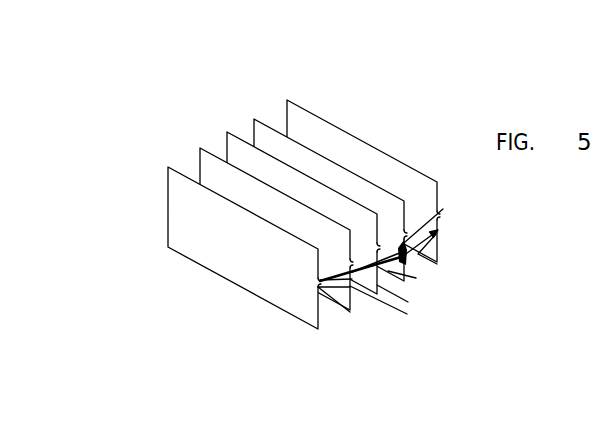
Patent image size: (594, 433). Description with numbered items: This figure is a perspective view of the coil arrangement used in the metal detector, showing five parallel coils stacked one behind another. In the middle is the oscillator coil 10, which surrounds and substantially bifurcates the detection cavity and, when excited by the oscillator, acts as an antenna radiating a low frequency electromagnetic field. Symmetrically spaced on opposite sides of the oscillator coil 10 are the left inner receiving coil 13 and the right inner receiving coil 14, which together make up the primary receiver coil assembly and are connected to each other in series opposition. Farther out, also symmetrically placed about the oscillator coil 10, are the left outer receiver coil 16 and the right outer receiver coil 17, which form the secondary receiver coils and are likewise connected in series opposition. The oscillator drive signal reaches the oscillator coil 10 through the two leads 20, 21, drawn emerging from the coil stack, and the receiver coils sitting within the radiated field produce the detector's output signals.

The oscillator coil 10 is at (227, 132).
The left inner receiving coil 13 is at (198, 147).
The right inner receiving coil 14 is at (255, 118).
The left outer receiver coil 16 is at (168, 248).
The right outer receiver coil 17 is at (312, 98).
The lead 20 is at (405, 315).
The lead 21 is at (408, 302).